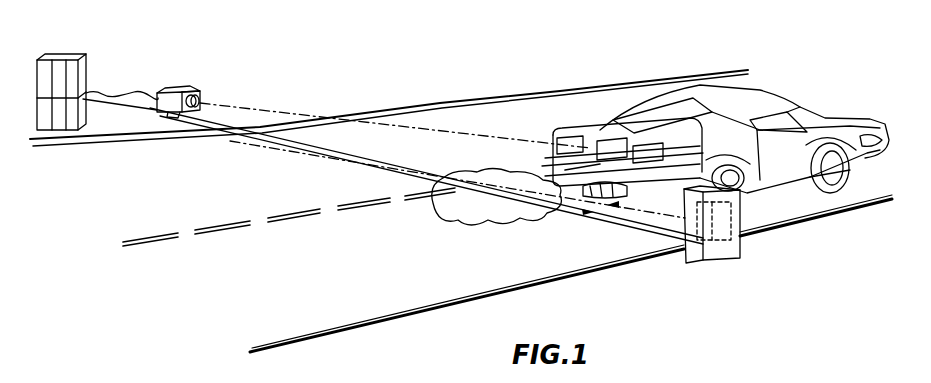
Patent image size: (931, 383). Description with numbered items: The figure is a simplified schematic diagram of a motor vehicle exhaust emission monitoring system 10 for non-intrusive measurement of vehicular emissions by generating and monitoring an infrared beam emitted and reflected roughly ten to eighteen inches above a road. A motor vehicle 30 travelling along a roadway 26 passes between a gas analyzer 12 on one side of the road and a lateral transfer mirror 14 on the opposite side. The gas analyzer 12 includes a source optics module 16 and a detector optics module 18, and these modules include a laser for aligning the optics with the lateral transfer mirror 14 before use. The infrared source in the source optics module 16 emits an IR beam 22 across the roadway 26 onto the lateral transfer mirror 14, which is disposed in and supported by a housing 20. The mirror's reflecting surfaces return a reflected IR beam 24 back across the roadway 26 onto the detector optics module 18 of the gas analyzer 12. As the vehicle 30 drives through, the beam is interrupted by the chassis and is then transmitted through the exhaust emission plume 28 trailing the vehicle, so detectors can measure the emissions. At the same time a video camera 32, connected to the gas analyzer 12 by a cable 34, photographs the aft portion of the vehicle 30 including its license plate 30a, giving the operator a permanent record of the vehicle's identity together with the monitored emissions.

The exhaust emission monitoring system 10 is at (169, 64).
The gas analyzer 12 is at (71, 72).
The lateral transfer mirror 14 is at (717, 213).
The source optics module 16 is at (39, 59).
The detector optics module 18 is at (80, 61).
The housing 20 is at (701, 238).
The IR beam 22 is at (362, 165).
The reflected IR beam 24 is at (308, 138).
The roadway 26 is at (351, 257).
The exhaust emission plume 28 is at (478, 222).
The motor vehicle 30 is at (715, 118).
The license plate 30a is at (598, 132).
The video camera 32 is at (190, 87).
The cable 34 is at (134, 92).